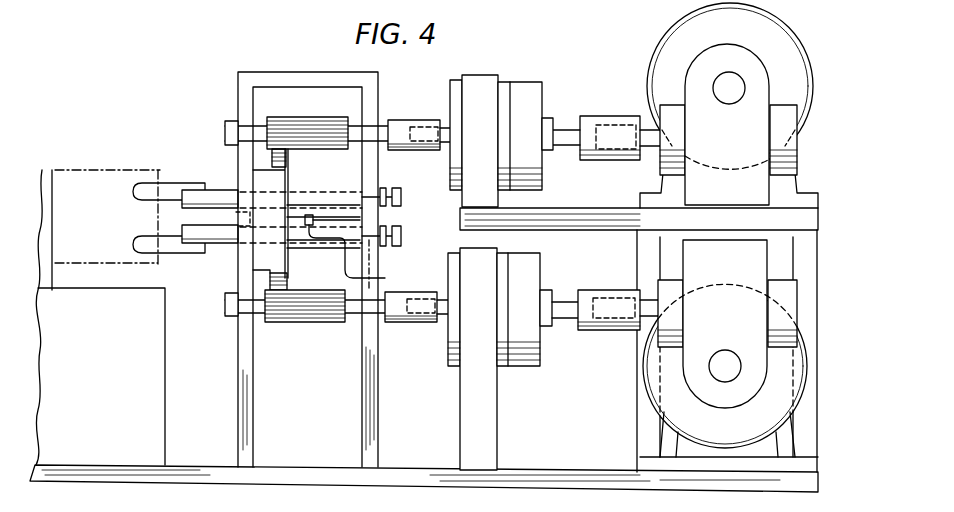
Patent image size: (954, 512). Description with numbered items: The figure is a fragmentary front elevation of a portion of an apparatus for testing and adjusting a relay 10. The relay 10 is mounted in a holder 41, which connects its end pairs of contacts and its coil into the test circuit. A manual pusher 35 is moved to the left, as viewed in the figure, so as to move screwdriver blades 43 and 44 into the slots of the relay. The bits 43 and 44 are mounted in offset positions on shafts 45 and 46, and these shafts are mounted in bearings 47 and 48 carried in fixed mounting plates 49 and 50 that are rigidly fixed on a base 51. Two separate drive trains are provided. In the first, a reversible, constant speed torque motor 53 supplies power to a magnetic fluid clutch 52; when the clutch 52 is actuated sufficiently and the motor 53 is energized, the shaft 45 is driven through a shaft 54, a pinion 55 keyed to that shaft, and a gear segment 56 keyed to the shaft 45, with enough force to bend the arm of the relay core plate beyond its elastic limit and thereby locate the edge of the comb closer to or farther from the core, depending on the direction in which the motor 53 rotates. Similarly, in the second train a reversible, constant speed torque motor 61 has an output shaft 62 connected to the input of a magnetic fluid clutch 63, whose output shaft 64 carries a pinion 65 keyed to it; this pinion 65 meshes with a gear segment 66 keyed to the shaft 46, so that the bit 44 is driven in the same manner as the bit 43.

The relay 10 is at (126, 172).
The manual pusher 35 is at (385, 278).
The holder 41 is at (44, 170).
The screwdriver blade 43 is at (176, 186).
The screwdriver blade 44 is at (170, 247).
The shaft 45 is at (218, 189).
The shaft 46 is at (217, 244).
The bearing 47 is at (233, 238).
The bearing 48 is at (369, 240).
The mounting plate 49 is at (238, 333).
The mounting plate 50 is at (374, 265).
The base 51 is at (280, 466).
The magnetic fluid clutch 52 is at (524, 80).
The reversible constant speed torque motor 53 is at (667, 45).
The shaft 54 is at (382, 121).
The pinion 55 is at (292, 117).
The gear segment 56 is at (288, 173).
The reversible constant speed torque motor 61 is at (650, 416).
The output shaft 62 is at (568, 318).
The magnetic fluid clutch 63 is at (522, 370).
The output shaft 64 is at (420, 325).
The pinion 65 is at (321, 325).
The gear segment 66 is at (288, 261).